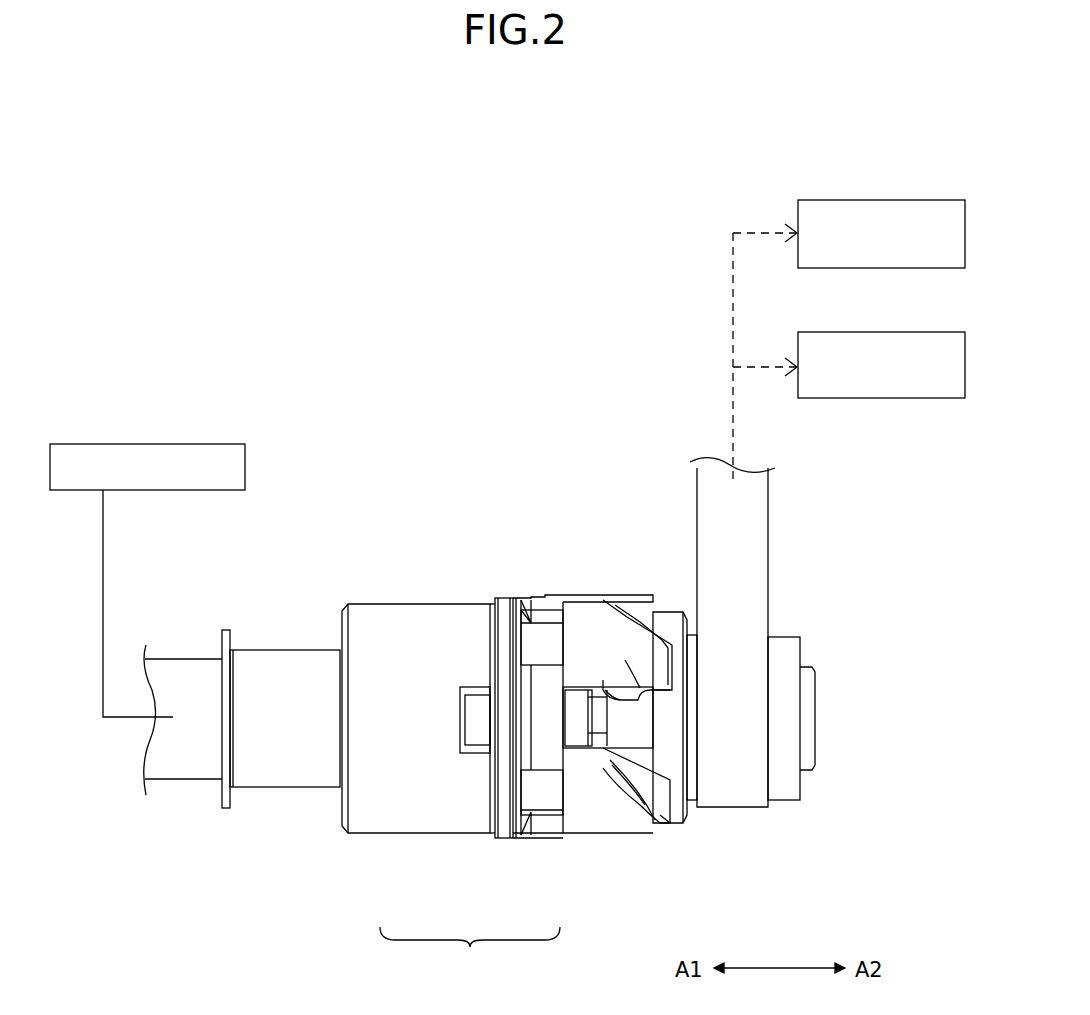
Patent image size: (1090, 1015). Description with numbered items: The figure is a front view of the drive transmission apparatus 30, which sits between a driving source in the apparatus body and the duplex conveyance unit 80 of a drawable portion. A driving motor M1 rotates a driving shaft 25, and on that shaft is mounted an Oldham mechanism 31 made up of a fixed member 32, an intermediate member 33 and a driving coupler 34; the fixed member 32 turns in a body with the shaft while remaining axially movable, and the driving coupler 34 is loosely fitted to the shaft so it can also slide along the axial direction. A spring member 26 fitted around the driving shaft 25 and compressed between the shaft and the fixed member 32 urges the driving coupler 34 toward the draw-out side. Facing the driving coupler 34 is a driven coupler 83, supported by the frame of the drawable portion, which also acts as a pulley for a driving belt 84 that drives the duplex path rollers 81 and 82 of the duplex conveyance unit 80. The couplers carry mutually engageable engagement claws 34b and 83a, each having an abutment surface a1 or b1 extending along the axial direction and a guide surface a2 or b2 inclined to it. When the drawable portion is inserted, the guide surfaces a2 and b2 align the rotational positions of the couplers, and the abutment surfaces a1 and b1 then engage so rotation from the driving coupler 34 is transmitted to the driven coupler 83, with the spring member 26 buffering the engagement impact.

The driving motor M1 is at (138, 444).
The driving shaft 25 is at (192, 780).
The spring member 26 is at (312, 788).
The drive transmission apparatus 30 is at (526, 492).
The Oldham mechanism 31 is at (470, 954).
The fixed member 32 is at (430, 835).
The intermediate member 33 is at (503, 840).
The driving coupler 34 is at (593, 835).
The engagement claw 34b is at (622, 835).
The duplex conveyance unit 80 is at (700, 378).
The duplex path roller 81 is at (853, 200).
The duplex path roller 82 is at (853, 332).
The driven coupler 83 is at (673, 605).
The engagement claw 83a is at (615, 702).
The driving belt 84 is at (748, 808).
The abutment surface a1 is at (638, 690).
The guide surface a2 is at (628, 753).
The abutment surface b1 is at (643, 695).
The guide surface b2 is at (660, 797).